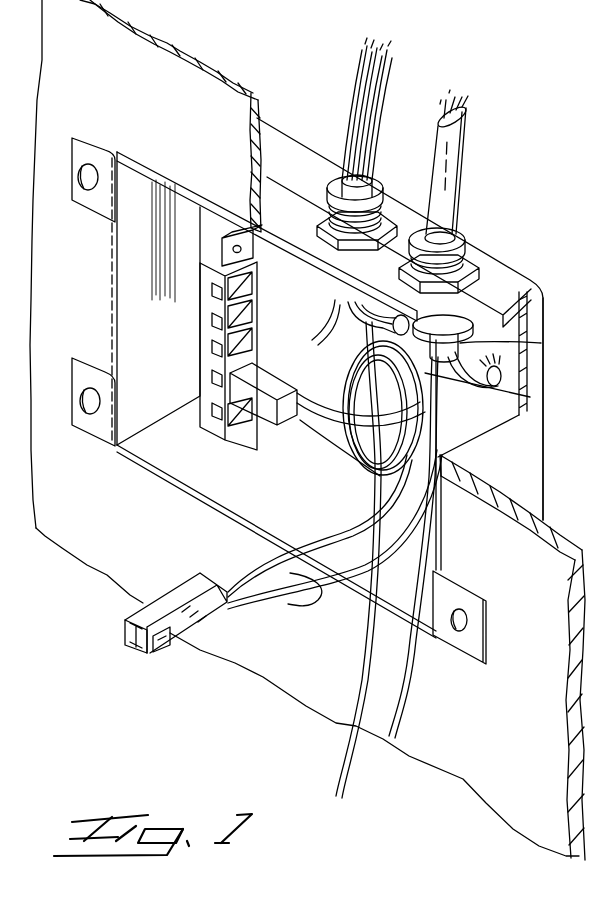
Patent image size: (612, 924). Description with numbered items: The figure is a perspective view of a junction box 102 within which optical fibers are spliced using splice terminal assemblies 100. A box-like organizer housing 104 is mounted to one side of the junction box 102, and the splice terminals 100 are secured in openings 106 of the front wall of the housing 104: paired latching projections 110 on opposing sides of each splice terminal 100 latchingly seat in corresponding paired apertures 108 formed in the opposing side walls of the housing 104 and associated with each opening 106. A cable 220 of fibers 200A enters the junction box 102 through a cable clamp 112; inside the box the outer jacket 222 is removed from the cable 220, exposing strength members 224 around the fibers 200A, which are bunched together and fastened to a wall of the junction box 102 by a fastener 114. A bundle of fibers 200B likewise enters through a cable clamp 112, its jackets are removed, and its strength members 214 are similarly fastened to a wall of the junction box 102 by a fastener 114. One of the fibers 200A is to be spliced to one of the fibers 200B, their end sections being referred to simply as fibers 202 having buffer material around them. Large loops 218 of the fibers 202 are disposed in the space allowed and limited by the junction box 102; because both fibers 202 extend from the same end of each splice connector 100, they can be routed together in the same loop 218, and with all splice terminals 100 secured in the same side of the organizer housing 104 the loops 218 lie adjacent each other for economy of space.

The splice terminal assembly 100 is at (112, 633).
The junction box 102 is at (172, 516).
The organizer housing 104 is at (213, 252).
The openings 106 is at (236, 322).
The paired apertures 108 is at (220, 334).
The paired latching projections 110 is at (166, 642).
The cable clamp 112 is at (337, 193).
The fastener 114 is at (392, 335).
The fibers 200A is at (467, 116).
The fibers 200B is at (388, 100).
The fibers 202 is at (328, 452).
The strength members 214 is at (352, 312).
The large loops 218 is at (361, 408).
The cable 220 is at (466, 180).
The outer jacket 222 is at (541, 344).
The strength members 224 is at (542, 424).